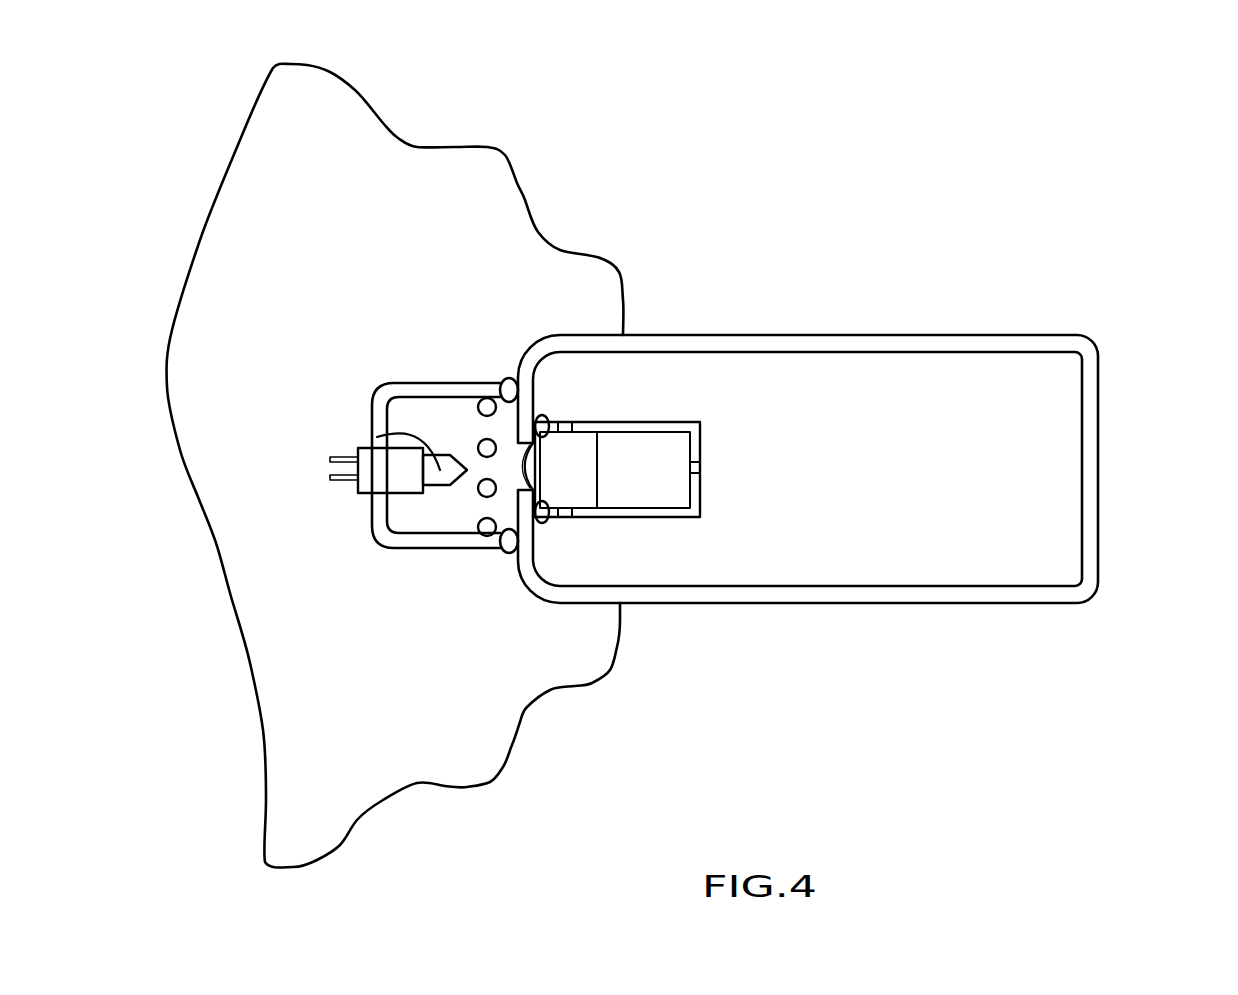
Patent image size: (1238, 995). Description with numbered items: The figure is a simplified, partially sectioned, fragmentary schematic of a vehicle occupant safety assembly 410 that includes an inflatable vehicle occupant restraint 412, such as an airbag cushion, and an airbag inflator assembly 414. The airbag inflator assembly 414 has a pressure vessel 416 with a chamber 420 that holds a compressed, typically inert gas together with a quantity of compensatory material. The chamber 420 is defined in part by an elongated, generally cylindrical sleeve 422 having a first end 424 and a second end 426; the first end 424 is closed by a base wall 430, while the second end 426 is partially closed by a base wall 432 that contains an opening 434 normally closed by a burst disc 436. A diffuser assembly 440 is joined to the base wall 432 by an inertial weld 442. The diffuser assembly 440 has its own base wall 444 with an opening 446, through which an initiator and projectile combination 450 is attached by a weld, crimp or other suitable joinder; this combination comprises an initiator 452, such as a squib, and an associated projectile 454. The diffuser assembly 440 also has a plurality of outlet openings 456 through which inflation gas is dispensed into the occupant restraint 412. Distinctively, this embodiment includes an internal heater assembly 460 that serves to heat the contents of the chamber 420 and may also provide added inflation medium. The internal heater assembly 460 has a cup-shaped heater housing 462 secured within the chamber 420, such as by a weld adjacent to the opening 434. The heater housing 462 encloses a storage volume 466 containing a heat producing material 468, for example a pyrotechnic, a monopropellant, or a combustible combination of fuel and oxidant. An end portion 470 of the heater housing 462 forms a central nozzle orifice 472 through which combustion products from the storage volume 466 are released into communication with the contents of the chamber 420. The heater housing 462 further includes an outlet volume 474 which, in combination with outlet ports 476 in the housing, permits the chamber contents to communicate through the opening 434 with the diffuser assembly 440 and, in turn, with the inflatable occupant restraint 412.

The vehicle occupant safety assembly 410 is at (802, 200).
The inflatable vehicle occupant restraint 412 is at (385, 123).
The airbag inflator assembly 414 is at (970, 330).
The pressure vessel 416 is at (798, 605).
The chamber 420 is at (1052, 416).
The sleeve 422 is at (860, 335).
The first end 424 is at (1080, 612).
The second end 426 is at (537, 608).
The base wall 430 is at (1098, 485).
The base wall 432 is at (543, 403).
The opening 434 is at (503, 553).
The burst disc 436 is at (532, 462).
The diffuser assembly 440 is at (383, 377).
The inertial weld 442 is at (520, 557).
The base wall 444 is at (377, 437).
The opening 446 is at (380, 498).
The initiator and projectile combination 450 is at (413, 510).
The initiator 452 is at (345, 467).
The projectile 454 is at (372, 437).
The outlet openings 456 is at (489, 378).
The internal heater assembly 460 is at (682, 513).
The heater housing 462 is at (707, 522).
The storage volume 466 is at (665, 508).
The heat producing material 468 is at (662, 455).
The end portion 470 is at (705, 443).
The nozzle orifice 472 is at (700, 468).
The outlet volume 474 is at (590, 447).
The outlet ports 476 is at (567, 523).